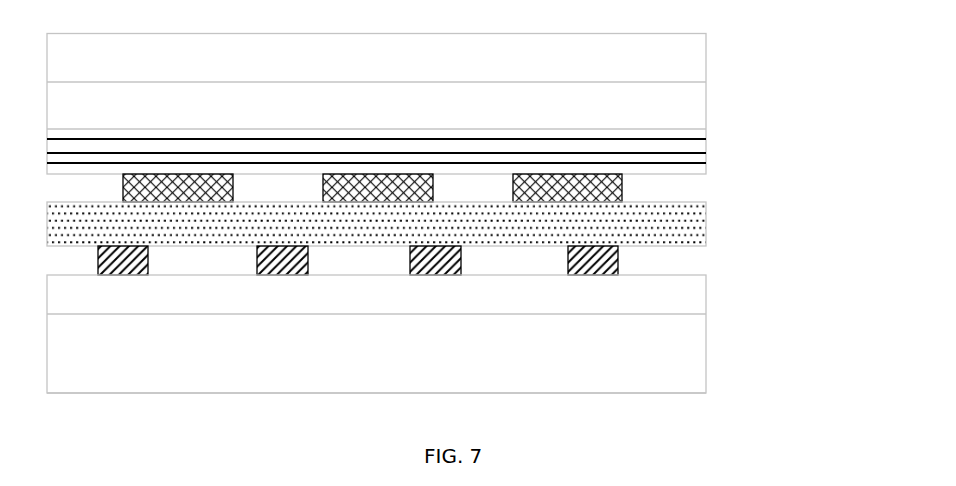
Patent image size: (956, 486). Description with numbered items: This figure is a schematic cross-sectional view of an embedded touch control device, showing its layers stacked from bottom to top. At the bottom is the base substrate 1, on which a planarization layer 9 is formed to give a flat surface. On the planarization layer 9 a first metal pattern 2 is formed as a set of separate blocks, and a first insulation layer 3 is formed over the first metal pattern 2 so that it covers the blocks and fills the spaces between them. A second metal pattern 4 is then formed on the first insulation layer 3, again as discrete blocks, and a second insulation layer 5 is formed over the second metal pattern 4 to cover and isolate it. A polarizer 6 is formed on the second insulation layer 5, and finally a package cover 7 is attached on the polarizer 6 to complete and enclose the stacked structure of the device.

The base substrate 1 is at (706, 321).
The first metal pattern 2 is at (618, 263).
The first insulation layer 3 is at (647, 236).
The second metal pattern 4 is at (622, 192).
The second insulation layer 5 is at (665, 158).
The polarizer 6 is at (688, 106).
The package cover 7 is at (677, 65).
The planarization layer 9 is at (693, 296).